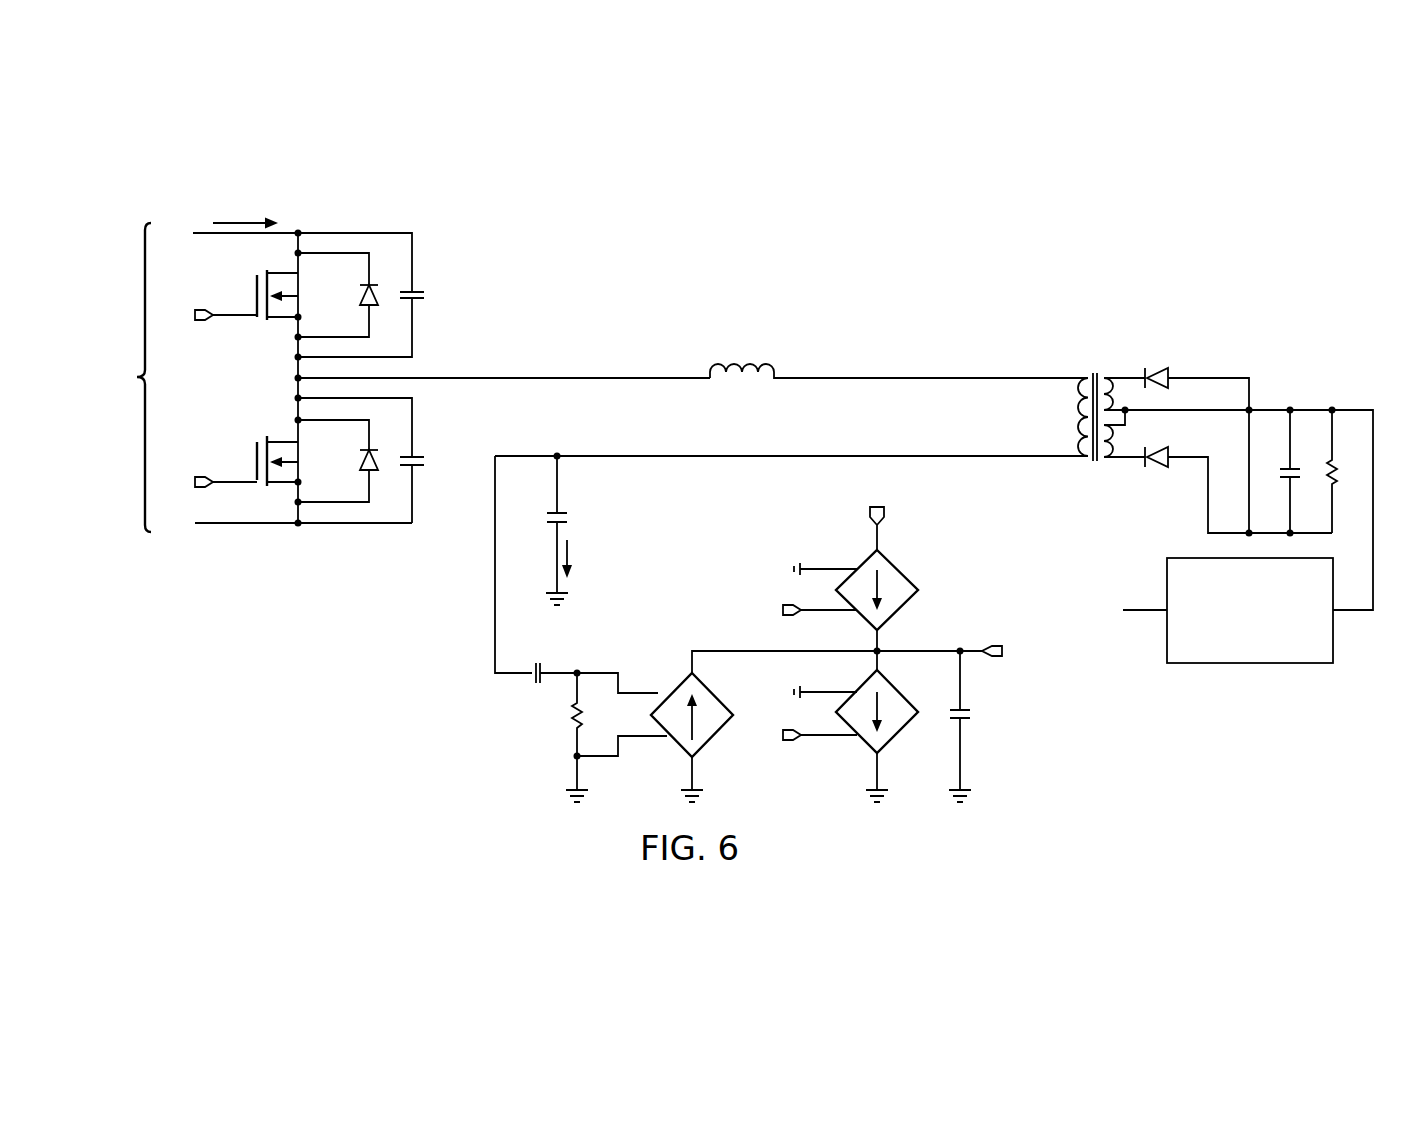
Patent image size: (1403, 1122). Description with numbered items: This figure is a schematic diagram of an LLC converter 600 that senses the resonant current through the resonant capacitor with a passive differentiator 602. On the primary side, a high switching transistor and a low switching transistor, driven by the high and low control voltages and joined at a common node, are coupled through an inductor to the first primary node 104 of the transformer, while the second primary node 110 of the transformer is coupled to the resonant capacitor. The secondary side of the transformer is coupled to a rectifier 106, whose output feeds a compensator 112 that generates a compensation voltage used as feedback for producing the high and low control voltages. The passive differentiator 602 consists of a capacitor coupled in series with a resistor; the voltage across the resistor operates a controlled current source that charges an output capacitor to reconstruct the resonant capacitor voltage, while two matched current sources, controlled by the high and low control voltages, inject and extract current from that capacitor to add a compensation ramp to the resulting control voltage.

The LLC converter 600 is at (1280, 239).
The first primary node 104 is at (1069, 377).
The second primary node 110 is at (1070, 458).
The rectifier 106 is at (1354, 383).
The compensator 112 is at (1271, 640).
The passive differentiator 602 is at (495, 735).